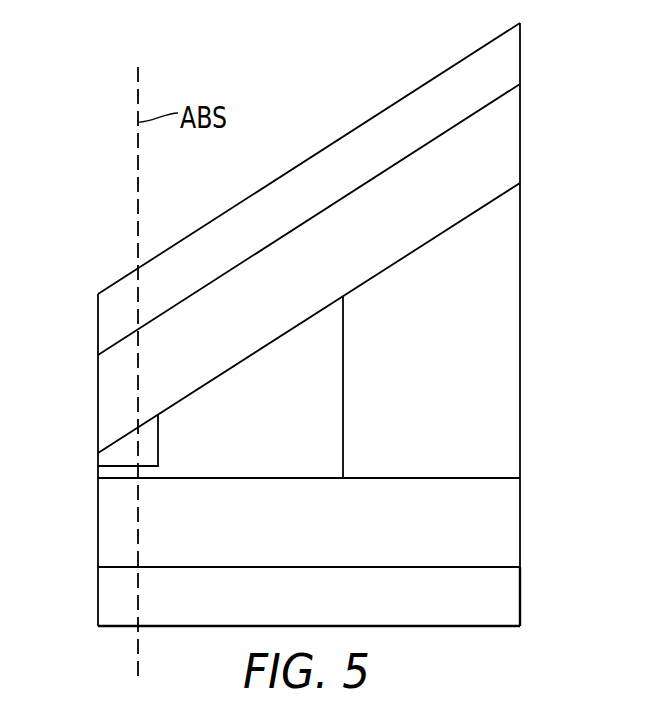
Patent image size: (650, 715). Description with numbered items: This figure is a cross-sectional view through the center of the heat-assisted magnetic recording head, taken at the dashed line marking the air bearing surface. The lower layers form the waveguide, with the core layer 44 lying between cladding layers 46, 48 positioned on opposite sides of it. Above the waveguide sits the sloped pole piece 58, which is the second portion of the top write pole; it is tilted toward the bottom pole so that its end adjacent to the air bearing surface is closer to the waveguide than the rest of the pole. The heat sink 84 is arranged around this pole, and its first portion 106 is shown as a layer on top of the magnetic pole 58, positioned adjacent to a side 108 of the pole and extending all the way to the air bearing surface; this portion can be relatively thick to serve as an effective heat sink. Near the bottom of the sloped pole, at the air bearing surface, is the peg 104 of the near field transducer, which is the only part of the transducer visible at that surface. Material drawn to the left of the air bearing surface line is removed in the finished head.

The core layer 44 is at (505, 525).
The cladding layer 46 is at (508, 598).
The cladding layer 48 is at (503, 385).
The sloped pole piece 58 is at (503, 147).
The heat sink 84 is at (326, 386).
The peg 104 is at (148, 470).
The first portion of heat sink 106 is at (354, 153).
The side of magnetic pole 108 is at (250, 468).